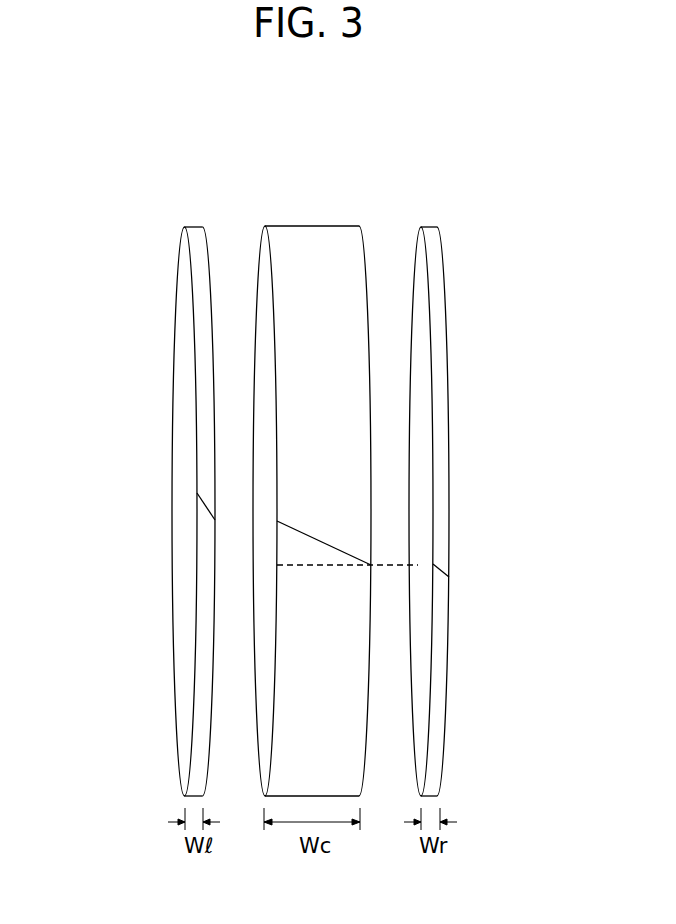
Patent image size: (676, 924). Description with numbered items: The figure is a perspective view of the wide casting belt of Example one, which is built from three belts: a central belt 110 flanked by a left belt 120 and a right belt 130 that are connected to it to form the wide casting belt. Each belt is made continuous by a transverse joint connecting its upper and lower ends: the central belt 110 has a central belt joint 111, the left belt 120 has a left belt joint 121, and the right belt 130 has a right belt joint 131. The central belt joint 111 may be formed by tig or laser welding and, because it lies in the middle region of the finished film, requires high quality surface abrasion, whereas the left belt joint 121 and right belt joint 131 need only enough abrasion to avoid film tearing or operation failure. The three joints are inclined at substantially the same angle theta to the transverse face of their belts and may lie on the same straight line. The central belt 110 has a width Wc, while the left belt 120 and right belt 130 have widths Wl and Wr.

The central belt 110 is at (312, 250).
The central belt joint 111 is at (325, 541).
The left belt 120 is at (200, 273).
The left belt joint 121 is at (197, 493).
The right belt 130 is at (432, 240).
The right belt joint 131 is at (443, 568).